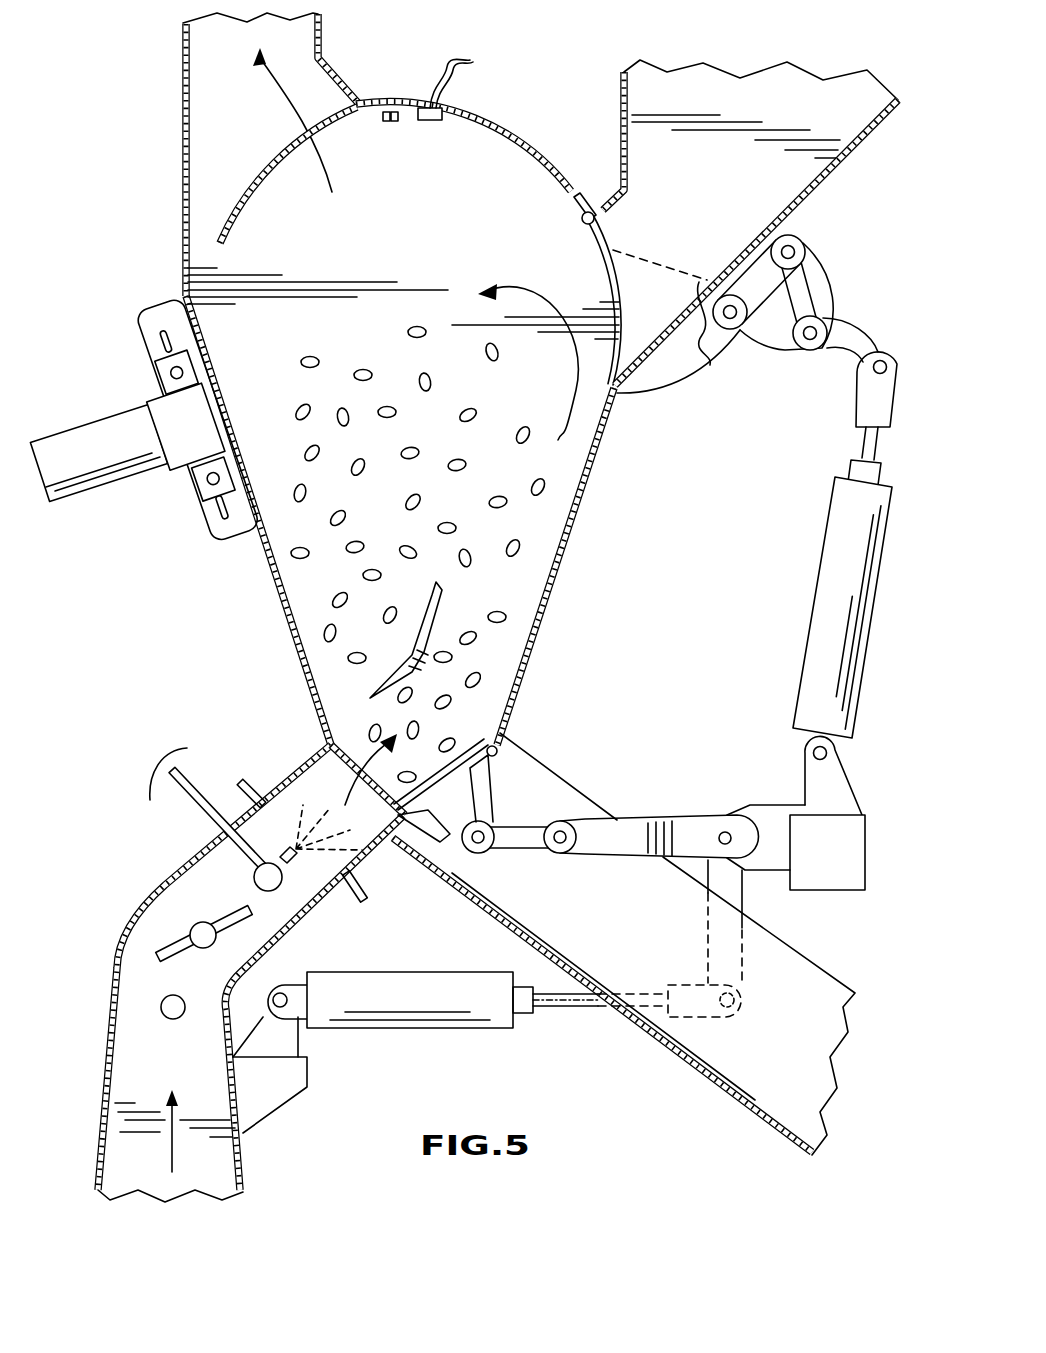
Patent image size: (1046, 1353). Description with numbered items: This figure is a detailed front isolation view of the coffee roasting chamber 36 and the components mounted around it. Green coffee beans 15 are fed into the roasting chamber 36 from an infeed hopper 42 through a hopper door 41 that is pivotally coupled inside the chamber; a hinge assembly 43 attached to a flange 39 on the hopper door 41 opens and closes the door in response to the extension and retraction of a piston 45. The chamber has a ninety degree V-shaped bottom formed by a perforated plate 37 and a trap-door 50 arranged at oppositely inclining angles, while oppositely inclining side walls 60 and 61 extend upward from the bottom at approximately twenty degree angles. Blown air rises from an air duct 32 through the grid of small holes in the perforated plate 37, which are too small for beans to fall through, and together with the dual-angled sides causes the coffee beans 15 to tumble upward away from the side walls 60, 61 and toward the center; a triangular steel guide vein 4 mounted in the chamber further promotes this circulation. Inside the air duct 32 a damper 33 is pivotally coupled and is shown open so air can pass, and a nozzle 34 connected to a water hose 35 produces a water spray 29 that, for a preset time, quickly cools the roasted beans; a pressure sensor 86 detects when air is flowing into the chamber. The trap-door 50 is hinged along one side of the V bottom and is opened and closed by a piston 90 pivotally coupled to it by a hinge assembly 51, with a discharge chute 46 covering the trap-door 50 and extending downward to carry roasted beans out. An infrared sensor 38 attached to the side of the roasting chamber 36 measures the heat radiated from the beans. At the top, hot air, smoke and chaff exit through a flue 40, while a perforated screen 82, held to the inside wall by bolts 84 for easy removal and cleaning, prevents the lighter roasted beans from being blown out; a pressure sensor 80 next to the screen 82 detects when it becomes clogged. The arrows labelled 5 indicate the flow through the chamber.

The triangular steel guide vein 4 is at (437, 620).
The flow of process air / material 5 is at (357, 797).
The green coffee beans 15 is at (527, 430).
The water spray 29 is at (298, 818).
The air duct 32 is at (143, 920).
The damper 33 is at (188, 950).
The nozzle 34 is at (256, 878).
The water hose 35 is at (208, 808).
The roasting chamber 36 is at (560, 580).
The perforated plate 37 is at (350, 750).
The infrared sensor 38 is at (123, 487).
The flange 39 is at (678, 393).
The flue 40 is at (323, 34).
The hopper door 41 is at (607, 237).
The infeed hopper 42 is at (700, 77).
The hinge assembly 43 is at (800, 242).
The piston 45 is at (820, 563).
The discharge chute 46 is at (700, 1073).
The trap-door 50 is at (470, 770).
The hinge assembly 51 is at (650, 817).
The side wall 60 is at (283, 598).
The side wall 61 is at (575, 520).
The pressure sensor 80 is at (432, 122).
The perforated screen 82 is at (262, 172).
The bolts 84 is at (393, 125).
The pressure sensor 86 is at (175, 1020).
The piston 90 is at (410, 972).